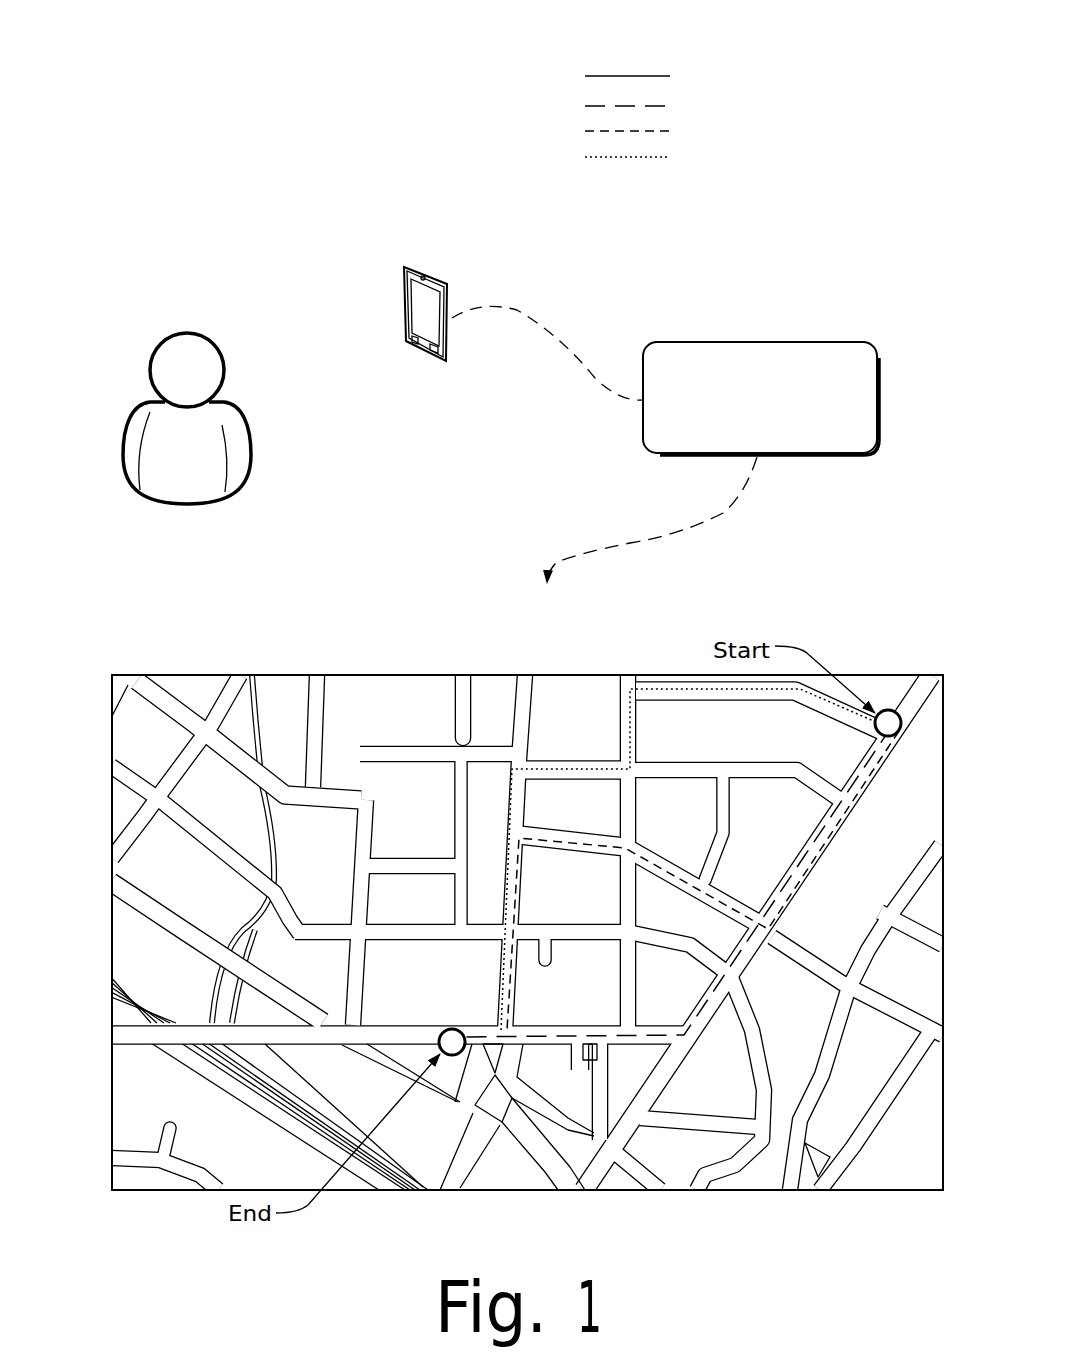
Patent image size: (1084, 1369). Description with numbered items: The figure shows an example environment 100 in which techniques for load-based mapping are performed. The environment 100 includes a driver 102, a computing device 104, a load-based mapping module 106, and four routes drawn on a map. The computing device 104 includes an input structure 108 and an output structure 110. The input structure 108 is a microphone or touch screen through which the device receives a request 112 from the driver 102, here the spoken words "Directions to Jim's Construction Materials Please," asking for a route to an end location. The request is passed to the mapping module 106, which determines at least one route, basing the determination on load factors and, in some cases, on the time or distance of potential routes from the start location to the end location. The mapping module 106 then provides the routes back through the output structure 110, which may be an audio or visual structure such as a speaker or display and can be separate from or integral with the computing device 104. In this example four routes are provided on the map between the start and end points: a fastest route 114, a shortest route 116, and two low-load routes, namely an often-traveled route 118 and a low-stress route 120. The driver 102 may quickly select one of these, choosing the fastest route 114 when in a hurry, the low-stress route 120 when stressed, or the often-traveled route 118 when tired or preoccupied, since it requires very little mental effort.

The environment 100 is at (128, 28).
The driver 102 is at (207, 541).
The computing device 104 is at (469, 390).
The load-based mapping module 106 is at (742, 431).
The input structure 108 is at (416, 325).
The output structure 110 is at (437, 290).
The request 112 is at (364, 151).
The fastest route 114 is at (880, 89).
The shortest route 116 is at (890, 118).
The often-traveled route 118 is at (958, 143).
The low-stress route 120 is at (922, 169).